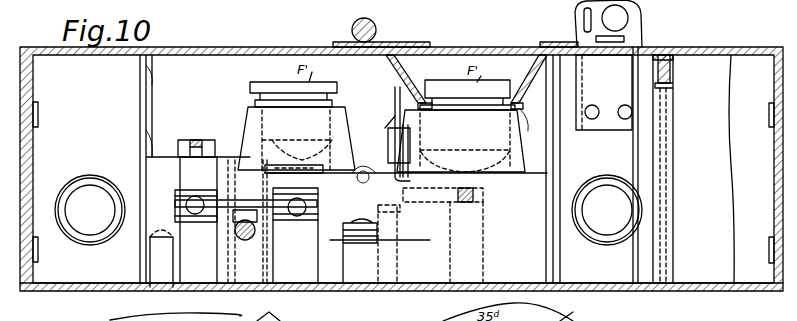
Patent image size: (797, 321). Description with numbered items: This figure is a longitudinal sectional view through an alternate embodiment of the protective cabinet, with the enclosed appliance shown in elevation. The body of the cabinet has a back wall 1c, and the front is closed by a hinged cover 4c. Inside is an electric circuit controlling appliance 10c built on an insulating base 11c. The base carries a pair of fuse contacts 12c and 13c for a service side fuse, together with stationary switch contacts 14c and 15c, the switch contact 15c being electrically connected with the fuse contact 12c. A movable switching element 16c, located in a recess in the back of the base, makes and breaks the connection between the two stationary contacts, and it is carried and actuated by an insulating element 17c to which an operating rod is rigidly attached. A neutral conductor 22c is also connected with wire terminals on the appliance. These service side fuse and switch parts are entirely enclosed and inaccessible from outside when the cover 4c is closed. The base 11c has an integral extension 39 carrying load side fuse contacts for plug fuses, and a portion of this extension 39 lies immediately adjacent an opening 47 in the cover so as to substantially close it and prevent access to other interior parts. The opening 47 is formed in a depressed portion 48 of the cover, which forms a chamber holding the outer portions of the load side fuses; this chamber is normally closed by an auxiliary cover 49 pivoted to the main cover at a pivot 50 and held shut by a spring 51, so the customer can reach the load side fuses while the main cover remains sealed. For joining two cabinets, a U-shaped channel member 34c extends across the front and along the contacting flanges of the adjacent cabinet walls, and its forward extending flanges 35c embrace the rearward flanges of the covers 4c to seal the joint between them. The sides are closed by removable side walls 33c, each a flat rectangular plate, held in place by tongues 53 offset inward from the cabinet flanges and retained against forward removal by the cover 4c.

The back wall 1c is at (108, 287).
The cover 4c is at (267, 43).
The appliance 10c is at (222, 150).
The insulating base 11c is at (152, 170).
The fuse contact 12c is at (307, 158).
The fuse contact 13c is at (324, 120).
The stationary switch contact 14c is at (176, 216).
The stationary switch contact 15c is at (317, 214).
The movable switching element 16c is at (220, 228).
The insulating element 17c is at (262, 218).
The neutral conductor 22c is at (393, 142).
The removable side wall 33c is at (773, 186).
The U-shaped channel member 34c is at (672, 88).
The forward extending flange 35c is at (656, 75).
The extension 39 is at (527, 228).
The opening 47 is at (519, 110).
The depressed portion 48 is at (519, 101).
The auxiliary cover 49 is at (459, 47).
The pivot 50 is at (373, 24).
The spring 51 is at (398, 42).
The tongue 53 is at (38, 111).